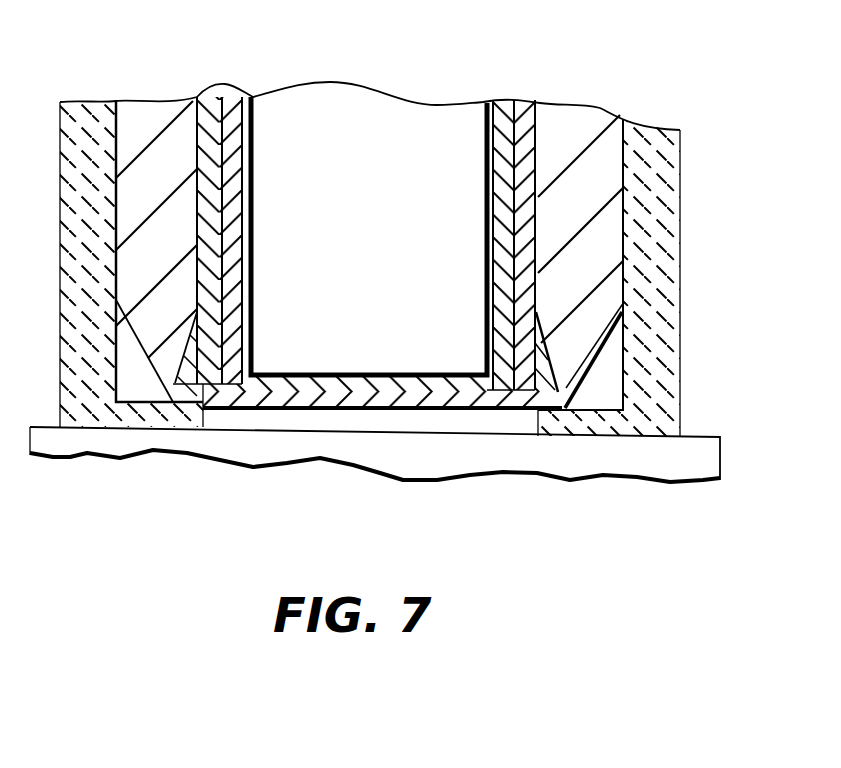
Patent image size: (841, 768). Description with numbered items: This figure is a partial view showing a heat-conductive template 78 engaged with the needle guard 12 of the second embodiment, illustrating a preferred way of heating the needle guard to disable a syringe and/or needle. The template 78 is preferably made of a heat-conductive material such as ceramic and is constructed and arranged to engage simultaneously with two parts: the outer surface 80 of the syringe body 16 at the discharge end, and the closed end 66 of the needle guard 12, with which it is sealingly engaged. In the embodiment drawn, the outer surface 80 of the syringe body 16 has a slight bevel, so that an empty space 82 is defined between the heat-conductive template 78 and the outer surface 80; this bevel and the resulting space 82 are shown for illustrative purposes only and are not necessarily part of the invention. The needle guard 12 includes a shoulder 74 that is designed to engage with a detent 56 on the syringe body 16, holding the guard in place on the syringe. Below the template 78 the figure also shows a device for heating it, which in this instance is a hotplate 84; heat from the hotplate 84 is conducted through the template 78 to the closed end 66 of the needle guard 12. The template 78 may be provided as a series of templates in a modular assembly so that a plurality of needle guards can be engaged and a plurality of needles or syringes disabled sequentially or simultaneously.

The needle guard 12 is at (484, 94).
The syringe body 16 is at (598, 276).
The detent 56 is at (538, 393).
The closed end 66 is at (323, 408).
The shoulder 74 is at (184, 351).
The heat-conductive template 78 is at (683, 267).
The outer surface 80 is at (623, 325).
The empty space 82 is at (613, 357).
The hotplate 84 is at (723, 443).